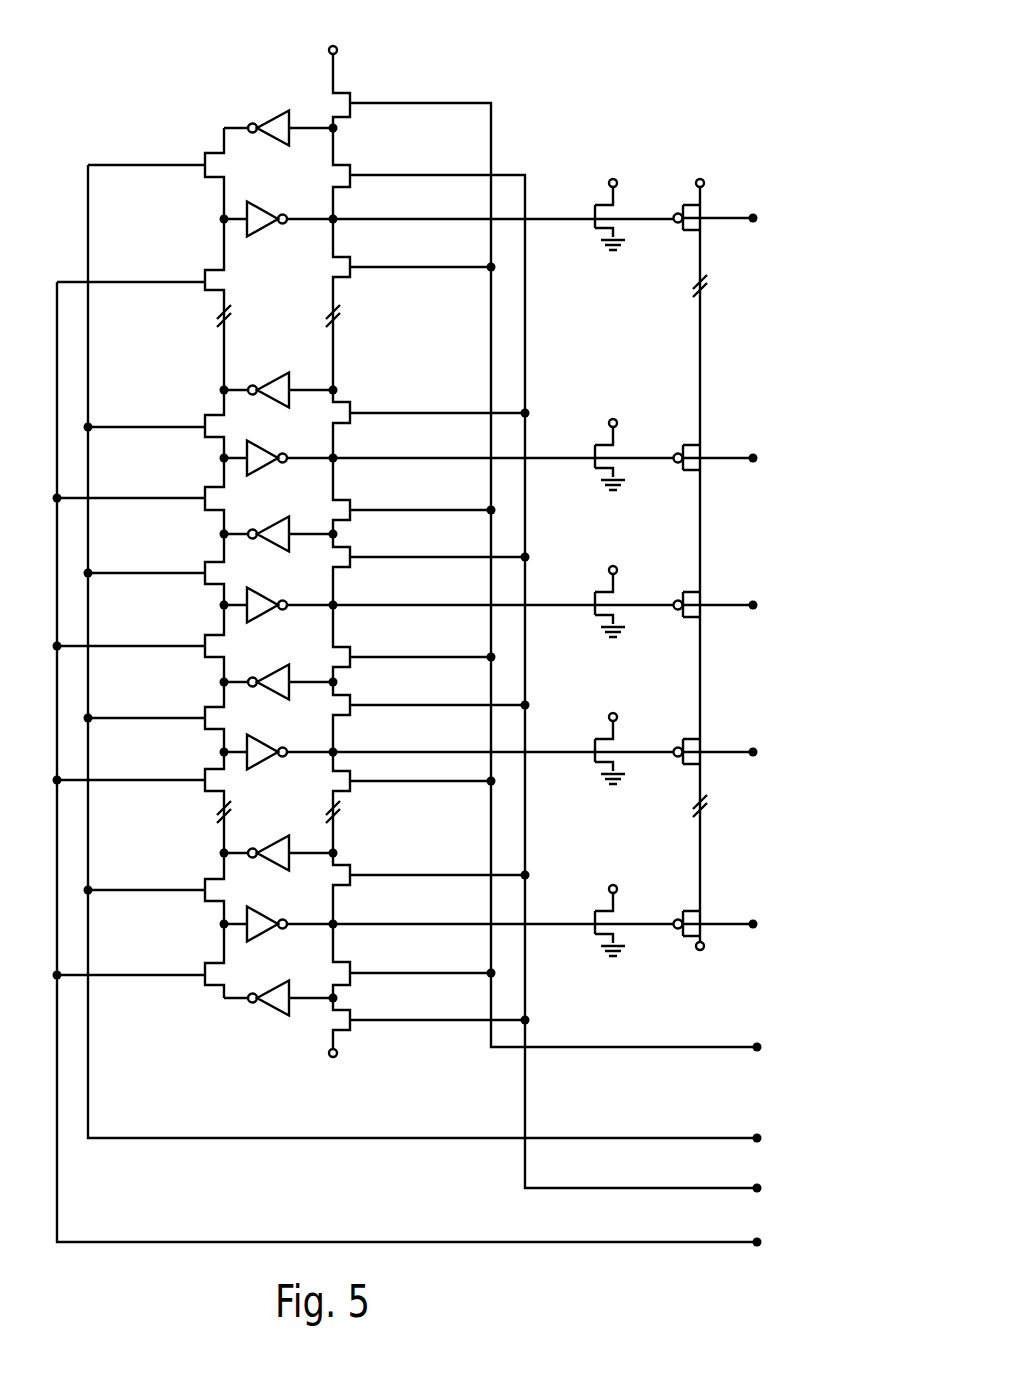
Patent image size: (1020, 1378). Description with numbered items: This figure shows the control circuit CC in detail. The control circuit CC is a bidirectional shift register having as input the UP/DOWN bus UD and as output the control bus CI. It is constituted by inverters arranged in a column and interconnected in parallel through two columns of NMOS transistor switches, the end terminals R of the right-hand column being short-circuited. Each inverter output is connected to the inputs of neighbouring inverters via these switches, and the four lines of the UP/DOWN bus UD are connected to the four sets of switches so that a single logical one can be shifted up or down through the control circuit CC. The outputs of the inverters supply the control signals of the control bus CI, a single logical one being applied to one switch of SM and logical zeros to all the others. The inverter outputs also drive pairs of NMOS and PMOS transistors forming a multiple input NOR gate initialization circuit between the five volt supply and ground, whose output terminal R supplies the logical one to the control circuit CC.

The control circuit CC is at (199, 113).
The control bus CI is at (805, 180).
The UP/DOWN bus UD is at (805, 1017).